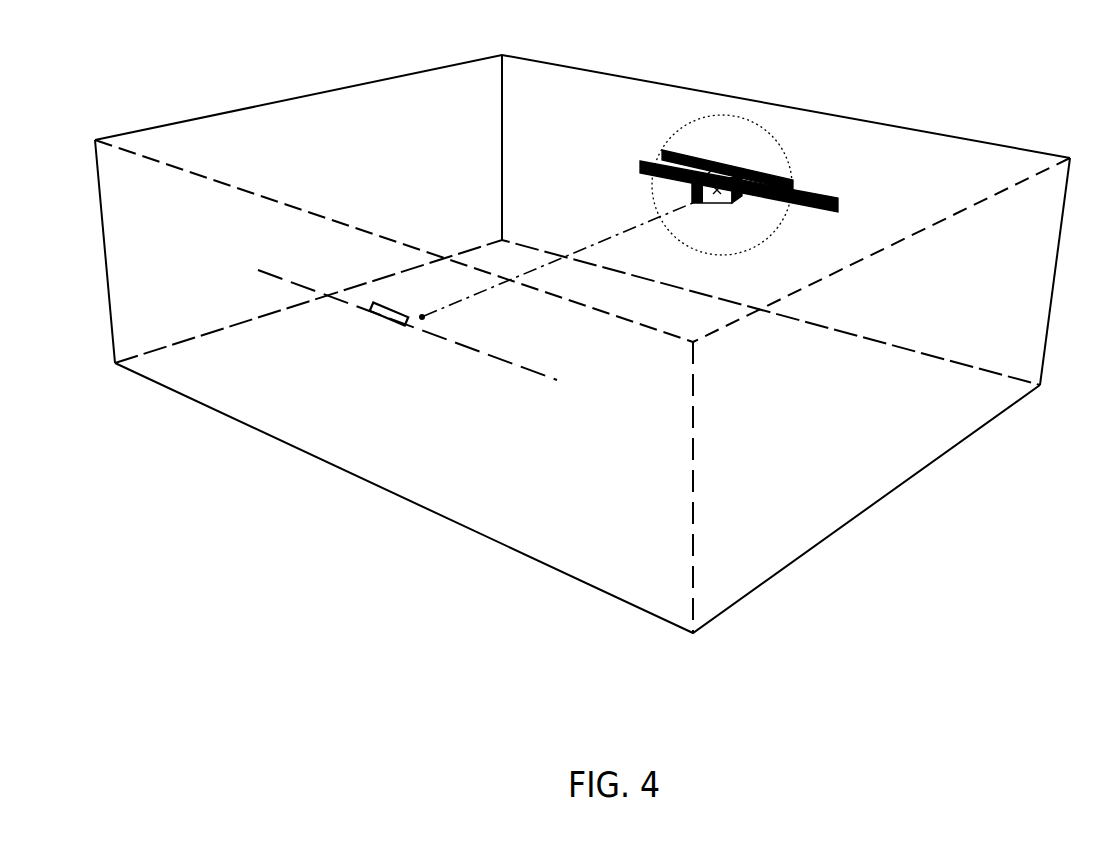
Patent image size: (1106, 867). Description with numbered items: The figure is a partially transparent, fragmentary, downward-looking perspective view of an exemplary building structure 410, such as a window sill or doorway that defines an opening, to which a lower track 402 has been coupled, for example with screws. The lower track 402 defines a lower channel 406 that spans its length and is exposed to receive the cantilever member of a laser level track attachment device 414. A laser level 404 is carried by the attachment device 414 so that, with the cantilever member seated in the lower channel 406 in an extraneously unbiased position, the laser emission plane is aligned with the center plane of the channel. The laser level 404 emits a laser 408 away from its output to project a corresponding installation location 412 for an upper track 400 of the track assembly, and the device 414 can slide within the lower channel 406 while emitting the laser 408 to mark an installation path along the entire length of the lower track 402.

The upper track 400 is at (392, 307).
The lower track 402 is at (768, 175).
The laser level 404 is at (713, 175).
The lower channel 406 is at (782, 188).
The laser 408 is at (628, 225).
The building structure 410 is at (228, 332).
The corresponding installation location 412 is at (470, 348).
The laser level track attachment device 414 is at (745, 203).